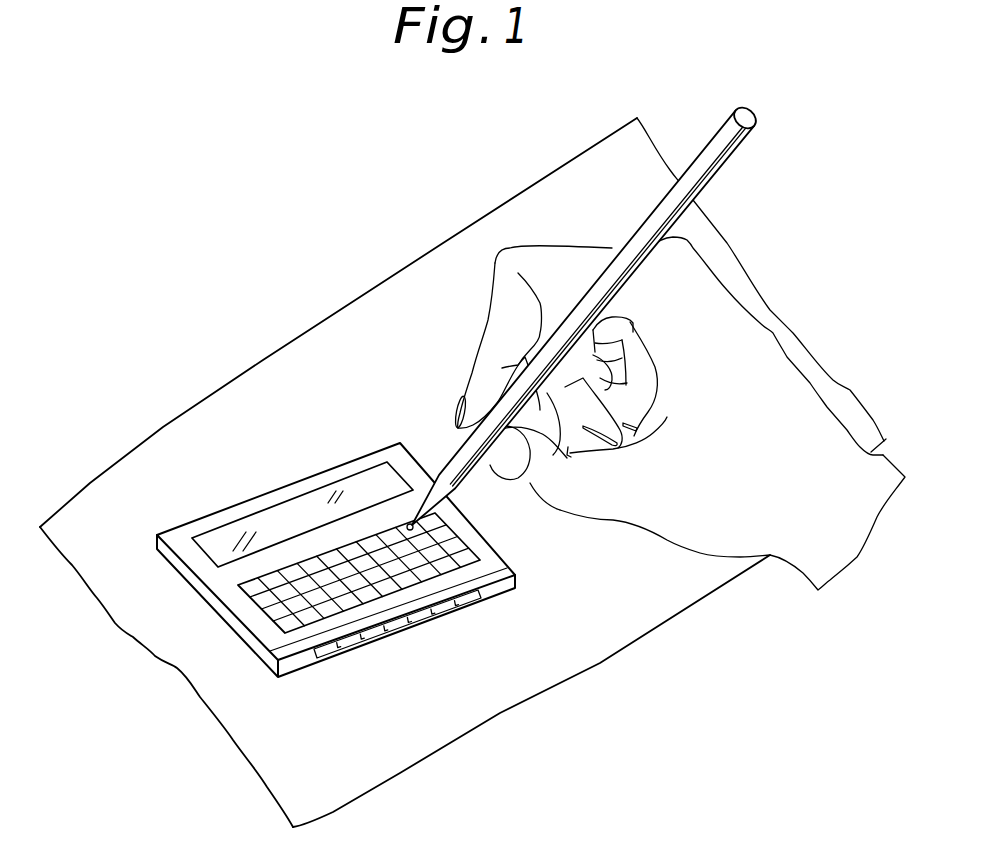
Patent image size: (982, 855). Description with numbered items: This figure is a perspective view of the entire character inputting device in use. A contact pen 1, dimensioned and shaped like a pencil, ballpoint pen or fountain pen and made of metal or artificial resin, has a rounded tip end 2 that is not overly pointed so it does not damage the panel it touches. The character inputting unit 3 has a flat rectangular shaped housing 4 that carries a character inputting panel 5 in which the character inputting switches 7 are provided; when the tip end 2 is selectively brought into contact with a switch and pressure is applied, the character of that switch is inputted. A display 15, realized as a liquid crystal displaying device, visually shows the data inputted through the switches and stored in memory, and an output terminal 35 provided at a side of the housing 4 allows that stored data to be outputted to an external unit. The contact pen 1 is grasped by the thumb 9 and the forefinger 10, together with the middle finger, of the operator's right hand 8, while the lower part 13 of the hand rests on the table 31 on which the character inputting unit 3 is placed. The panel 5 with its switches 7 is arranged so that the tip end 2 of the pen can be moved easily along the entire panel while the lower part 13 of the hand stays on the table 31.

The contact pen 1 is at (462, 455).
The tip end 2 is at (433, 531).
The character inputting unit 3 is at (190, 601).
The housing 4 is at (212, 513).
The character inputting panel 5 is at (272, 608).
The character inputting switches 7 is at (378, 573).
The right hand 8 is at (767, 363).
The thumb 9 is at (540, 470).
The forefinger 10 is at (484, 363).
The lower part of the hand 13 is at (702, 555).
The display 15 is at (315, 500).
The table 31 is at (612, 603).
The output terminal 35 is at (470, 602).